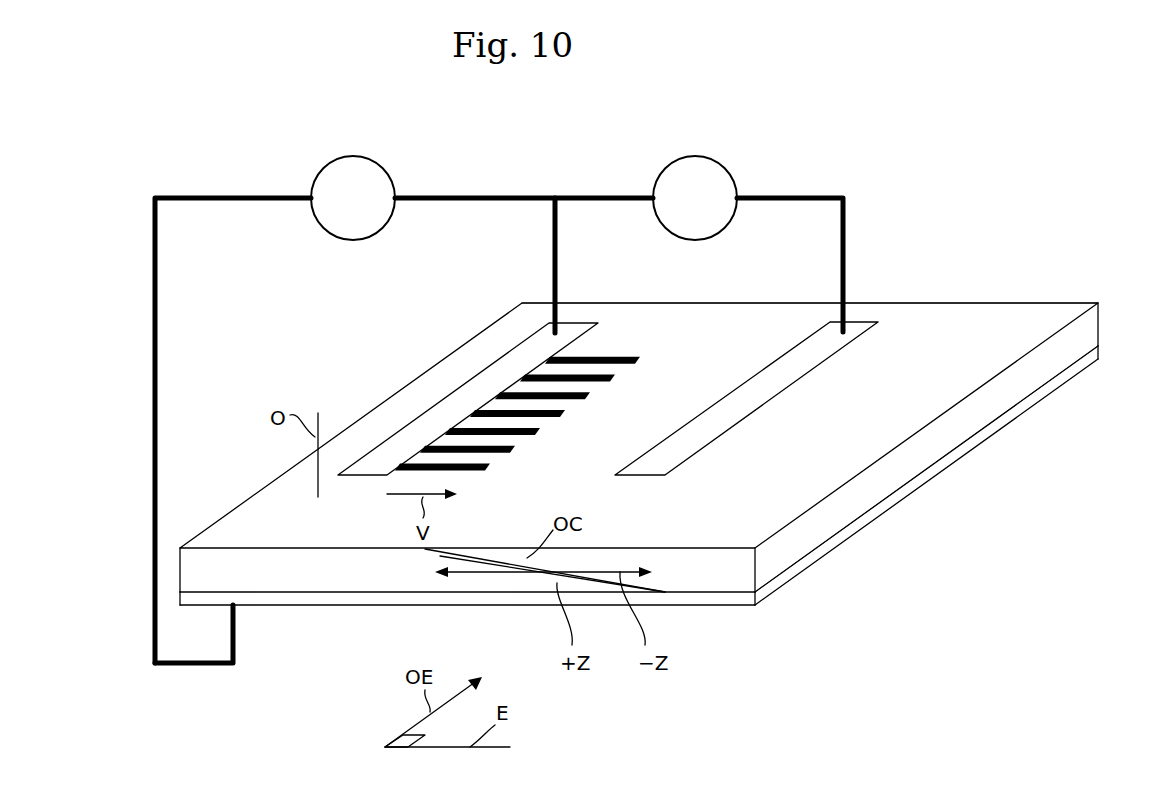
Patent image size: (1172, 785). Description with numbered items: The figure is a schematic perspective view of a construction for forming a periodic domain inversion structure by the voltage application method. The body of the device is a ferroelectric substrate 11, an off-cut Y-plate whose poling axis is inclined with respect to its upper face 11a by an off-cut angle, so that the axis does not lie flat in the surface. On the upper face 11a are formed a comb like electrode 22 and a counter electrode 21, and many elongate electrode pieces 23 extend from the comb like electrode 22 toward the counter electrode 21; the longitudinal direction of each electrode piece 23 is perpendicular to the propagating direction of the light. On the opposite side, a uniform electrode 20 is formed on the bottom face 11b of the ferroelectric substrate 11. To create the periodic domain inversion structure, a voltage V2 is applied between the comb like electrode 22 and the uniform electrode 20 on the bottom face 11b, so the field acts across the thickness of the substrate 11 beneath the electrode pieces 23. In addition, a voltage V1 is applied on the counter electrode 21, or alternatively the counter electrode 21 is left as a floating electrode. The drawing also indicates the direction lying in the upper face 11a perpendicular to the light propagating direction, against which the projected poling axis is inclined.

The ferroelectric substrate 11 is at (1085, 338).
The upper face 11a is at (1030, 313).
The bottom face 11b is at (1042, 393).
The uniform electrode 20 is at (865, 527).
The counter electrode 21 is at (770, 388).
The comb like electrode 22 is at (508, 367).
The electrode piece 23 is at (468, 475).
The voltage V1 is at (695, 198).
The voltage V2 is at (353, 198).